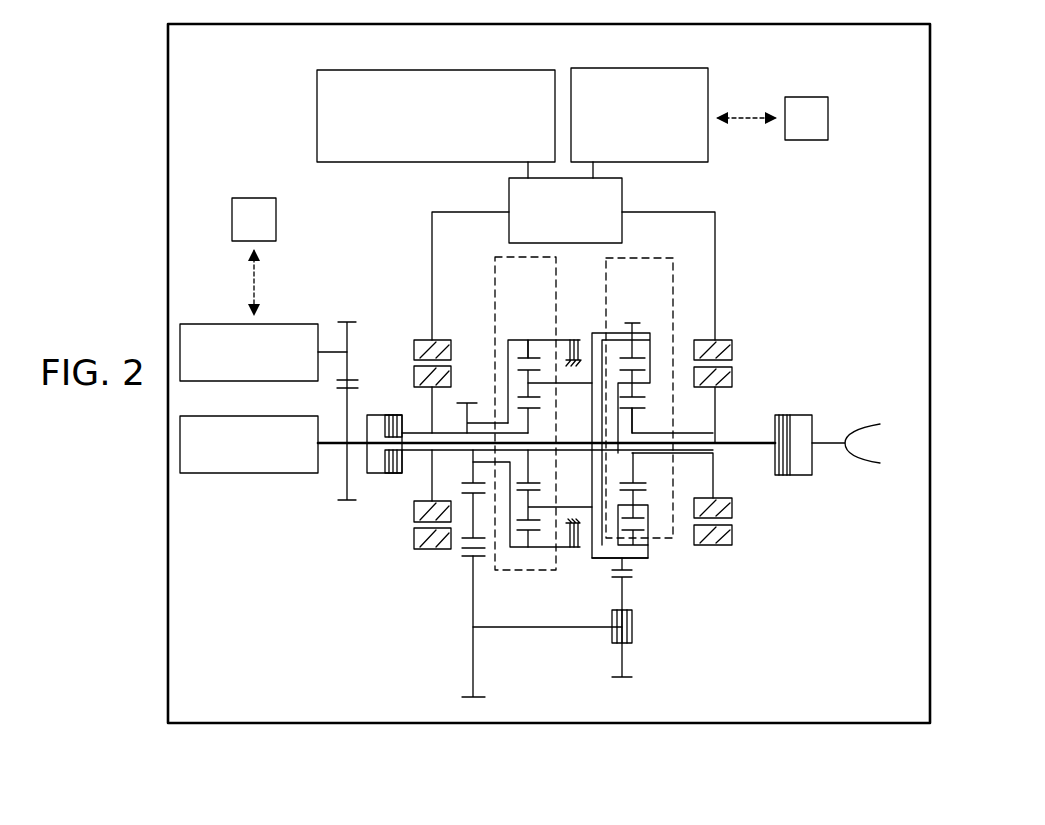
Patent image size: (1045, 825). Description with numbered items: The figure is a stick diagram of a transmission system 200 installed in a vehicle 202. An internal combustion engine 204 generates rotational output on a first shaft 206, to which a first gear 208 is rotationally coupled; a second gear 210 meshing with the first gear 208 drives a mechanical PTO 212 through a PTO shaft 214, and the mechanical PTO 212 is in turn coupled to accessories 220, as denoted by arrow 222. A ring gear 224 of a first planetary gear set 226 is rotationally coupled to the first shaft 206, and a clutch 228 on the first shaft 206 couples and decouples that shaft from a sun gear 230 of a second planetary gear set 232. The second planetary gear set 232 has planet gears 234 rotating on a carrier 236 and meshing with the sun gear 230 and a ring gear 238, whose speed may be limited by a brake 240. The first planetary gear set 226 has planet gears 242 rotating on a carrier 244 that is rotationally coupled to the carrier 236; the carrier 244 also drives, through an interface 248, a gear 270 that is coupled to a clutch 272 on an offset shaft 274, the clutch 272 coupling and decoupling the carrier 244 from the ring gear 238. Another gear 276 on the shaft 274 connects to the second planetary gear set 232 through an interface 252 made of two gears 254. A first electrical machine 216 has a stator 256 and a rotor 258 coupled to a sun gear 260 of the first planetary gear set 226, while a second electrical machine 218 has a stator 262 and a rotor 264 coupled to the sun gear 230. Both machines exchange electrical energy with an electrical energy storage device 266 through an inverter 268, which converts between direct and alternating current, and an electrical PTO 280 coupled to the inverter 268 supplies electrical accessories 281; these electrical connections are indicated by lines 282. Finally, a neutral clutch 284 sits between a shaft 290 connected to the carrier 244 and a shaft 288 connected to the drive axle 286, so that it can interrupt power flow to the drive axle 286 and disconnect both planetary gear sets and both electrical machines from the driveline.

The transmission system 200 is at (893, 122).
The vehicle 202 is at (180, 24).
The internal combustion engine 204 is at (186, 473).
The first shaft 206 is at (332, 462).
The first gear 208 is at (347, 406).
The second gear 210 is at (350, 383).
The mechanical PTO 212 is at (186, 324).
The PTO shaft 214 is at (346, 325).
The first electrical machine 216 is at (742, 348).
The second electrical machine 218 is at (412, 352).
The accessories 220 is at (254, 198).
The arrow 222 is at (252, 275).
The ring gear 224 is at (634, 355).
The first planetary gear set 226 is at (620, 258).
The clutch 228 is at (377, 478).
The sun gear 230 is at (530, 428).
The second planetary gear set 232 is at (500, 257).
The planet gears 234 is at (526, 380).
The carrier 236 is at (574, 385).
The ring gear 238 is at (532, 352).
The brake 240 is at (572, 336).
The planet gears 242 is at (638, 500).
The carrier 244 is at (652, 372).
The interface 248 is at (680, 570).
The interface 252 is at (462, 494).
The gears 254 is at (467, 403).
The stator 256 is at (722, 338).
The rotor 258 is at (732, 377).
The sun gear 260 is at (658, 412).
The stator 262 is at (427, 338).
The rotor 264 is at (414, 510).
The electrical energy storage device 266 is at (317, 100).
The inverter 268 is at (622, 190).
The gear 270 is at (620, 595).
The clutch 272 is at (640, 628).
The shaft 274 is at (555, 627).
The gear 276 is at (473, 597).
The electrical PTO 280 is at (708, 105).
The electrical accessories 281 is at (828, 128).
The lines 282 is at (528, 170).
The clutch 284 is at (768, 488).
The drive axle 286 is at (892, 433).
The shaft 288 is at (832, 443).
The shaft 290 is at (746, 443).